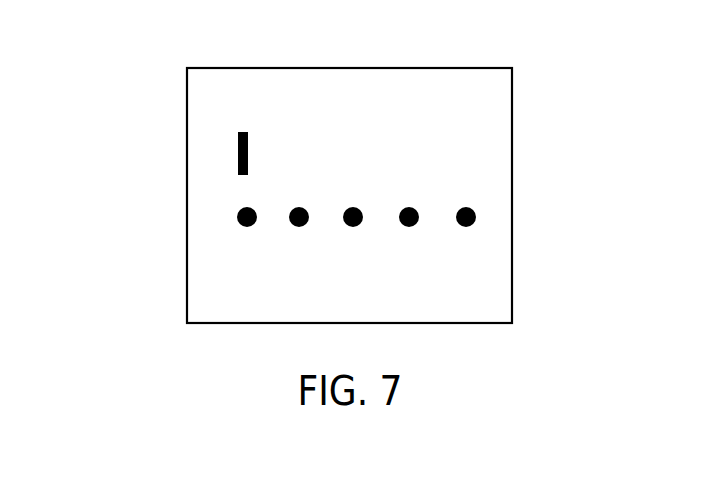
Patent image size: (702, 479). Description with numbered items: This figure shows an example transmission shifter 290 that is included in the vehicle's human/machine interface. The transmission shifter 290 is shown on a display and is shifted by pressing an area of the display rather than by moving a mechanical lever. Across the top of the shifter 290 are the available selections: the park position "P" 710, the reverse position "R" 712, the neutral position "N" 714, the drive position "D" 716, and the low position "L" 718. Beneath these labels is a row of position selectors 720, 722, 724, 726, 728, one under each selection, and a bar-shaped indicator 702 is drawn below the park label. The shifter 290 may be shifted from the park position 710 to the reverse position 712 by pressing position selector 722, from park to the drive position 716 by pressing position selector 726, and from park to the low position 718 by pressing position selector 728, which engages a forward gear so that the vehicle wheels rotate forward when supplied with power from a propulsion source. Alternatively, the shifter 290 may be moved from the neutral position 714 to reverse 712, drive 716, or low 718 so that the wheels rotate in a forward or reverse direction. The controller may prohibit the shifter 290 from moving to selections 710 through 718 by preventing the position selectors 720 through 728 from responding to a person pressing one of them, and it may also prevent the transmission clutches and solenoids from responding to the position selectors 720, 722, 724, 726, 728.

The transmission shifter 290 is at (187, 235).
The current shift position indicator bar 702 is at (237, 137).
The park position 710 is at (238, 68).
The reverse position 712 is at (300, 68).
The neutral position 714 is at (357, 68).
The drive position 716 is at (413, 68).
The low position 718 is at (464, 68).
The position selector 720 is at (238, 226).
The position selector 722 is at (290, 226).
The position selector 724 is at (344, 226).
The position selector 726 is at (400, 226).
The position selector 728 is at (457, 226).